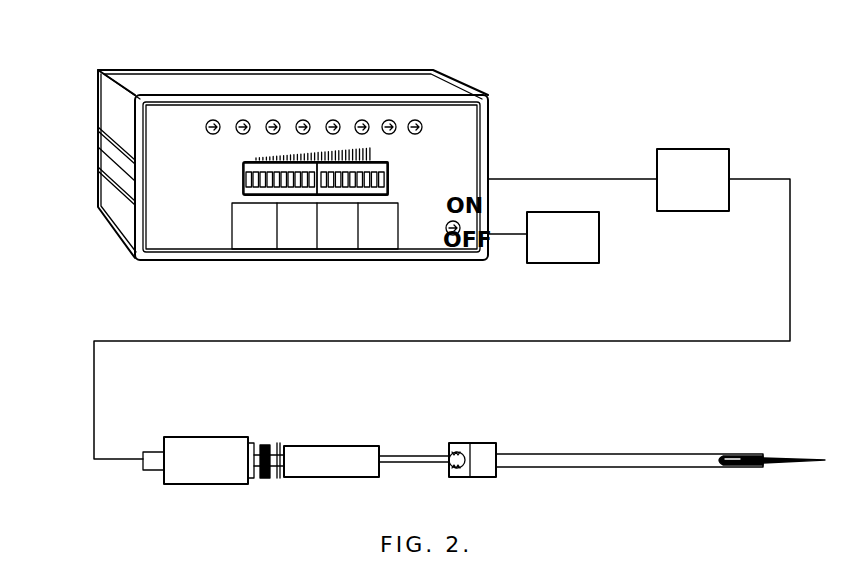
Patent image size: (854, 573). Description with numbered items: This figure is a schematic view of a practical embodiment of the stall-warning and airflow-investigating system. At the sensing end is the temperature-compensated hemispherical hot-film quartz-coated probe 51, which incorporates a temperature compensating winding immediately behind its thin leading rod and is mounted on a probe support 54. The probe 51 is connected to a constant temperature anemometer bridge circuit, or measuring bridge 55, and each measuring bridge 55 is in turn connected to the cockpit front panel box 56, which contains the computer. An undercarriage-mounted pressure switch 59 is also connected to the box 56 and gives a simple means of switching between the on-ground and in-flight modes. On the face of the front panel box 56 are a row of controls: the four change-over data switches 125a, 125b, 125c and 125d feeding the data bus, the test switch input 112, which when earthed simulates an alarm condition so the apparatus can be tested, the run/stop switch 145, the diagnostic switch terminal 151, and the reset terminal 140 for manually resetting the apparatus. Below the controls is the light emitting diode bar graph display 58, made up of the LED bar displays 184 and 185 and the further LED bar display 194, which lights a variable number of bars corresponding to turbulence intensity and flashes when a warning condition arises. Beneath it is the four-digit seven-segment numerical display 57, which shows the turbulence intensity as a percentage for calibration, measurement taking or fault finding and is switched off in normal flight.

The front panel box 56 is at (488, 92).
The change-over data switch 125a is at (213, 120).
The change-over data switch 125b is at (243, 120).
The change-over data switch 125c is at (273, 120).
The change-over data switch 125d is at (303, 120).
The test switch input 112 is at (333, 120).
The run/stop switch 145 is at (362, 120).
The diagnostic switch terminal 151 is at (389, 120).
The reset terminal 140 is at (415, 120).
The light emitting diode bar display 184 is at (266, 170).
The light emitting diode bar display 185 is at (370, 172).
The light emitting diode bar display 194 is at (243, 182).
The LED bar graph display 58 is at (334, 180).
The four-digit seven-segment numerical display 57 is at (258, 238).
The constant temperature anemometer bridge circuit 55 is at (677, 168).
The undercarriage-mounted pressure switch 59 is at (572, 243).
The probe support 54 is at (562, 460).
The hot-film probe 51 is at (808, 458).